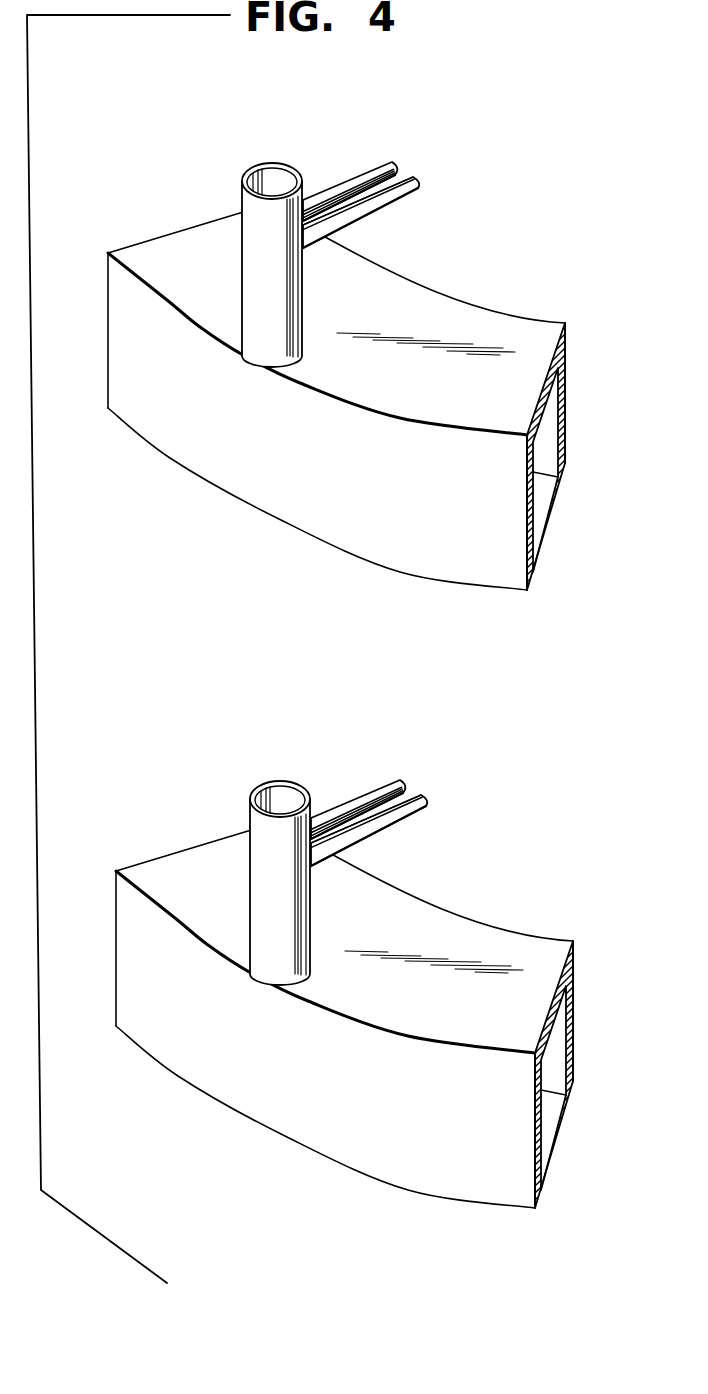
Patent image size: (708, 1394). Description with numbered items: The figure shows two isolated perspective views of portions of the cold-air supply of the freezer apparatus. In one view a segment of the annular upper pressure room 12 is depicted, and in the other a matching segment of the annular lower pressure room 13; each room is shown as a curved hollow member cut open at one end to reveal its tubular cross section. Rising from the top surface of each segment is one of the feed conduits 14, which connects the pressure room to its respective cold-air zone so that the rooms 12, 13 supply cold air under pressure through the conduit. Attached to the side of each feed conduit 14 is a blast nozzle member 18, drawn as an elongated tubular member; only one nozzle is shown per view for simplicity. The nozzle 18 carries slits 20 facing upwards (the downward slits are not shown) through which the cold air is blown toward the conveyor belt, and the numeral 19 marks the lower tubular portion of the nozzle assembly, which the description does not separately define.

In FIG. 4A, the upper pressure room 12 is at (543, 485).
In FIG. 4B, the lower pressure room 13 is at (366, 1053).
In FIG. 4A, the feed conduit 14 is at (253, 250).
In FIG. 4B, the feed conduit 14 is at (249, 883).
In FIG. 4A, the blast nozzle member 18 is at (418, 179).
In FIG. 4B, the blast nozzle member 18 is at (406, 795).
In FIG. 4A, the lower connecting pin 19 is at (393, 210).
In FIG. 4B, the lower connecting pin 19 is at (407, 833).
In FIG. 4A, the slits 20 is at (370, 200).
In FIG. 4B, the slits 20 is at (366, 780).